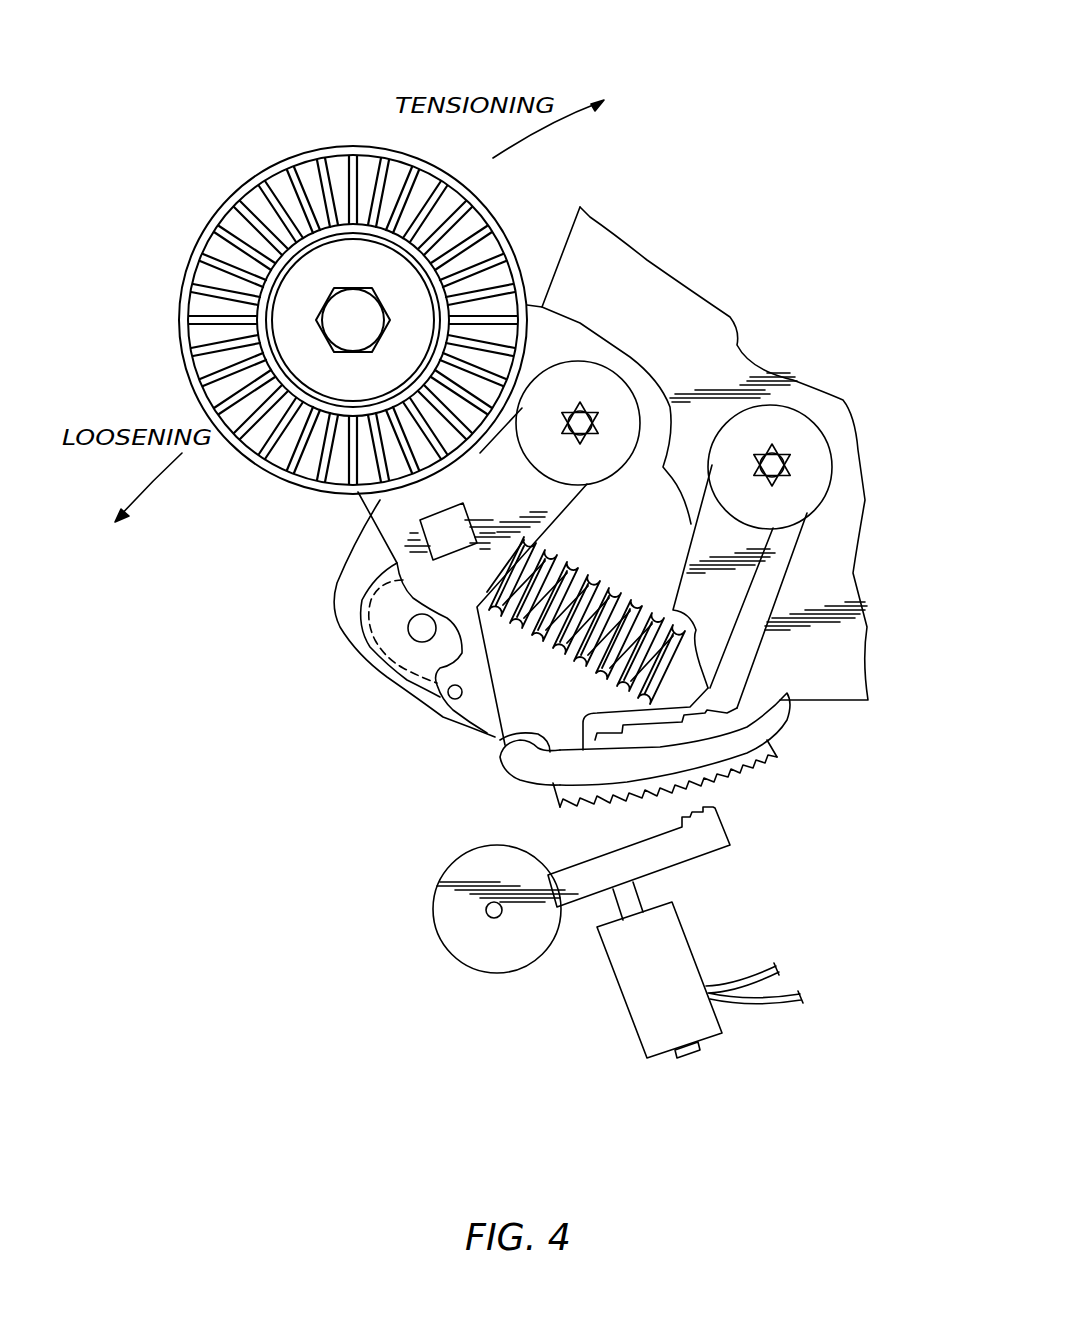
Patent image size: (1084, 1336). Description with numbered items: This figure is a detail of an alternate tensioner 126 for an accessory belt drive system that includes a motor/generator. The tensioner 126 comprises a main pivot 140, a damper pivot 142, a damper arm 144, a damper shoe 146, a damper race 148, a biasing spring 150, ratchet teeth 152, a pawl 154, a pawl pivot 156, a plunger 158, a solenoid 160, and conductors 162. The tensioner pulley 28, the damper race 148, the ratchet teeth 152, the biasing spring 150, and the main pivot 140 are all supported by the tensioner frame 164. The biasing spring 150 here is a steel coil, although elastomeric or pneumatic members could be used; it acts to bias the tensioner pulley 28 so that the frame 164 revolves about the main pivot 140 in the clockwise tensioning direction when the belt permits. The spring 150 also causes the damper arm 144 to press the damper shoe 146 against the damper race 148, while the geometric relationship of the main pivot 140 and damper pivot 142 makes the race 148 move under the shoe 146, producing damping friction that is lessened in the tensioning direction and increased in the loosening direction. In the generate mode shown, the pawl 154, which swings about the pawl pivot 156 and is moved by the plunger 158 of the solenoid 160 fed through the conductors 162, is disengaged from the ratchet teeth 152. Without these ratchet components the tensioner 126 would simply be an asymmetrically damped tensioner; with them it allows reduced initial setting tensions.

The tensioner 126 is at (722, 72).
The tensioner pulley 28 is at (278, 478).
The main pivot 140 is at (583, 420).
The damper pivot 142 is at (772, 462).
The damper arm 144 is at (803, 540).
The damper shoe 146 is at (777, 690).
The damper race 148 is at (527, 737).
The biasing spring 150 is at (505, 632).
The ratchet teeth 152 is at (777, 757).
The pawl 154 is at (725, 815).
The pawl pivot 156 is at (485, 907).
The plunger 158 is at (635, 892).
The solenoid 160 is at (612, 970).
The conductors 162 is at (782, 1005).
The tensioner frame 164 is at (773, 677).